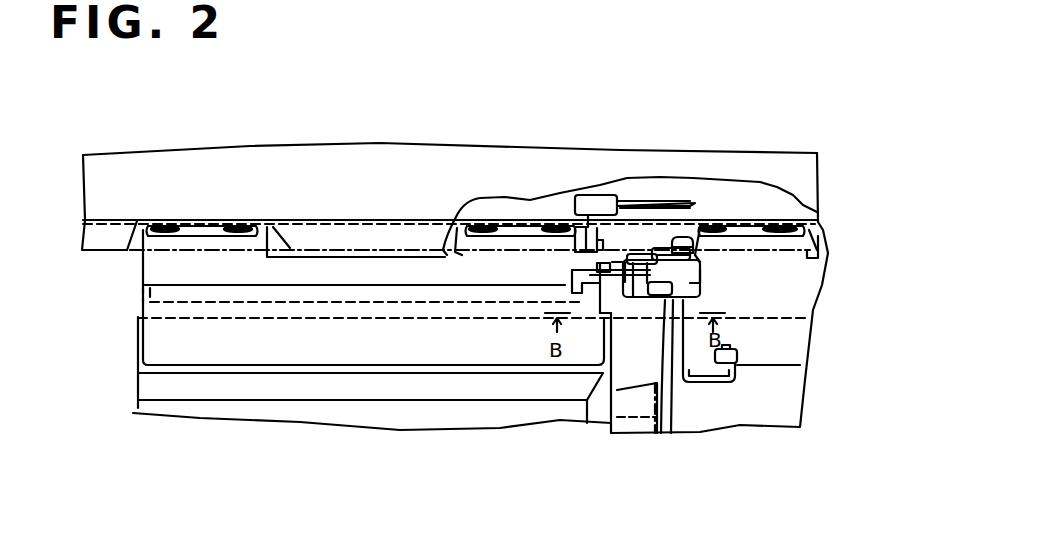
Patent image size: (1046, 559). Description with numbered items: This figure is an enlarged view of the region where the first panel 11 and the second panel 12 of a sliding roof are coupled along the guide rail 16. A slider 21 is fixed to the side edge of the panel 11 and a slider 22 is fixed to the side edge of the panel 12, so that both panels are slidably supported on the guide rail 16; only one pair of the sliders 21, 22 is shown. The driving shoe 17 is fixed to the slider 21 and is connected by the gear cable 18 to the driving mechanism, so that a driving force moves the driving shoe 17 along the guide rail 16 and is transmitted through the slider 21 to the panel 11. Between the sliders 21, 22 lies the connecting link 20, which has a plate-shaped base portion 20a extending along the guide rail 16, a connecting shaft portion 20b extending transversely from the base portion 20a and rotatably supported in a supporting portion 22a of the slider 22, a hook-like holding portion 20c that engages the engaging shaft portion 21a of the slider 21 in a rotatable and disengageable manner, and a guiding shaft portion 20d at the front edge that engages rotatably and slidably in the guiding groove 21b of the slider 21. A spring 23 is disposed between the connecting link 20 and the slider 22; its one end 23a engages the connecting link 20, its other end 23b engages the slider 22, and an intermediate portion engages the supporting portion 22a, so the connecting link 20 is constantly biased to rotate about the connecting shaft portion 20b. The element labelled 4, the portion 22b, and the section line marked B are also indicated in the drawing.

The rod 4 is at (630, 255).
The panel 11 is at (310, 410).
The panel 12 is at (735, 412).
The guide rail 16 is at (373, 233).
The driving shoe 17 is at (605, 203).
The gear cable 18 is at (658, 255).
The connecting link 20 is at (648, 255).
The base portion 20a is at (655, 298).
The connecting shaft portion 20b is at (700, 287).
The holding portion 20c is at (595, 265).
The guiding shaft portion 20d is at (577, 293).
The slider 21 is at (252, 238).
The engaging shaft portion 21a is at (608, 292).
The guiding groove 21b is at (482, 293).
The slider 22 is at (762, 267).
The supporting portion 22a is at (697, 260).
The second slider leg 22b is at (692, 256).
The spring 23 is at (686, 325).
The one end 23a is at (618, 262).
The other end 23b is at (737, 363).